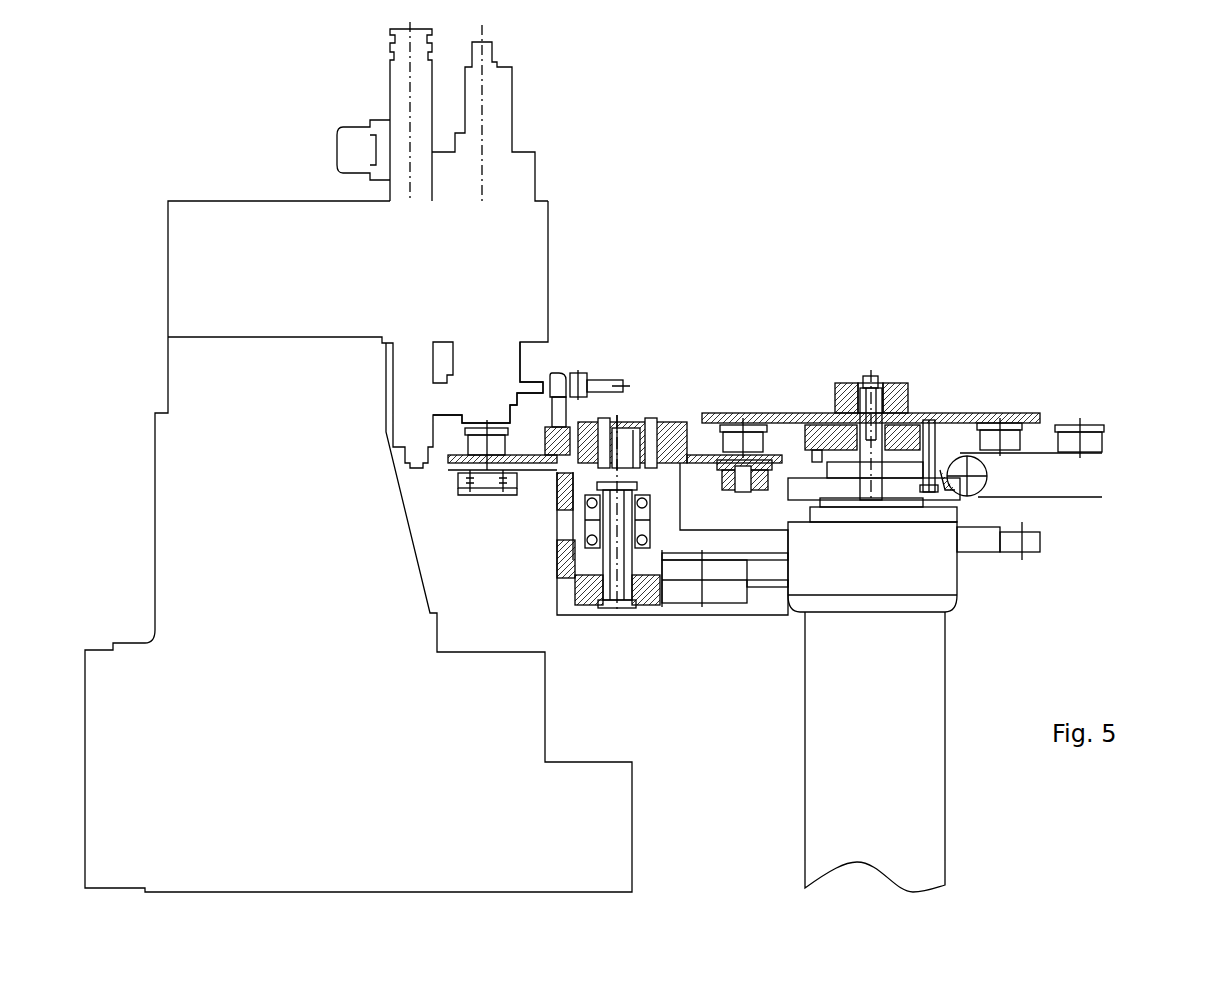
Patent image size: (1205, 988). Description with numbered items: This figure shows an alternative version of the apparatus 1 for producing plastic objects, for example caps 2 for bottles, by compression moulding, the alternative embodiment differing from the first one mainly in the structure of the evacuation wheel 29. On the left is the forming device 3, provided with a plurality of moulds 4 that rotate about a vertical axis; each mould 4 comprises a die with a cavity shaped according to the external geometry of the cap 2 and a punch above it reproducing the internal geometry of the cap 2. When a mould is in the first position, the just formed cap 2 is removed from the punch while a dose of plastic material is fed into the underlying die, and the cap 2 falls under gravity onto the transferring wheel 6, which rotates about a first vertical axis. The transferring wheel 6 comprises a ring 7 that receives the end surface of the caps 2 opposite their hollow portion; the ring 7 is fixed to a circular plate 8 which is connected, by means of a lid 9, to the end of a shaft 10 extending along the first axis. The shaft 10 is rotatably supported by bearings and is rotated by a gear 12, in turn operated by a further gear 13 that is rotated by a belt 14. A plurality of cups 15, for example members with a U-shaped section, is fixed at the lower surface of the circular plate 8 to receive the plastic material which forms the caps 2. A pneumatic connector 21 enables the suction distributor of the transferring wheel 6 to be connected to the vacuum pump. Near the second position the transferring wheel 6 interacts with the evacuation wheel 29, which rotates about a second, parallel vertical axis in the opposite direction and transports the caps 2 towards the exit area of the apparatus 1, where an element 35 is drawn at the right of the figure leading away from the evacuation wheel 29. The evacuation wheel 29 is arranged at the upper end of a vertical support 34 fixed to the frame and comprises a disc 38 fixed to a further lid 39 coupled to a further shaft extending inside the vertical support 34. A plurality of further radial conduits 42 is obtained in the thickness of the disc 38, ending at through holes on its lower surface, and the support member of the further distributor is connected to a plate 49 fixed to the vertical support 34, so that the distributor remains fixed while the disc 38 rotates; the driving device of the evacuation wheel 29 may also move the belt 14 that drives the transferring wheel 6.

The apparatus 1 is at (810, 162).
The cap 2 is at (437, 457).
The forming device 3 is at (228, 110).
The mould 4 is at (490, 412).
The transferring wheel 6 is at (665, 410).
The ring 7 is at (462, 480).
The circular plate 8 is at (690, 455).
The lid 9 is at (640, 420).
The shaft 10 is at (600, 563).
The gear 12 is at (583, 607).
The further gear 13 is at (683, 607).
The belt 14 is at (752, 568).
The cup 15 is at (497, 488).
The pneumatic connector 21 is at (600, 378).
The evacuation wheel 29 is at (938, 380).
The vertical support 34 is at (925, 700).
The conveyor belt 35 is at (1070, 498).
The disc 38 is at (982, 408).
The further lid 39 is at (897, 378).
The further radial conduit 42 is at (787, 410).
The plate 49 is at (888, 490).